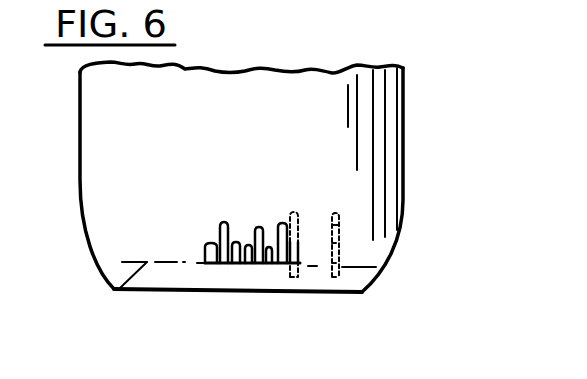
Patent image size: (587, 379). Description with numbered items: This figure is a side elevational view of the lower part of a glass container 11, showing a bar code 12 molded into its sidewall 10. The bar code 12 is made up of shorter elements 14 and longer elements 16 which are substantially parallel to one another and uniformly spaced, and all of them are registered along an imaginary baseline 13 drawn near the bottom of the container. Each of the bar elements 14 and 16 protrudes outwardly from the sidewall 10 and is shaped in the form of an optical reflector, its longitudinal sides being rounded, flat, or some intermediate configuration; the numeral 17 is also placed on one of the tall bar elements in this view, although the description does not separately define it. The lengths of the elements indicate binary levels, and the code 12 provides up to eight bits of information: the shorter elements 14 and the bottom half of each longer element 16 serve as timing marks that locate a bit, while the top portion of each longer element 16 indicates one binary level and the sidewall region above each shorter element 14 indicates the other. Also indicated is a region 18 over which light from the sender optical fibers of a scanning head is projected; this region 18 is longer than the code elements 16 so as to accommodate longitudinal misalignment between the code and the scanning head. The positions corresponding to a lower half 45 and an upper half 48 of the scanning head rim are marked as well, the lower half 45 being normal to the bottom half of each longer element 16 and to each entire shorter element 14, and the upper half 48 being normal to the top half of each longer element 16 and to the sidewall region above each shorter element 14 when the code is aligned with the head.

The sidewall 10 is at (378, 138).
The glass container 11 is at (405, 293).
The bar code 12 is at (244, 162).
The imaginary baseline 13 is at (116, 290).
The shorter elements 14 is at (207, 250).
The longer elements 16 is at (220, 265).
The tall contact tooth 17 is at (222, 222).
The region 18 is at (328, 230).
The lower half of the rim 45 is at (338, 258).
The upper half of the rim 48 is at (338, 228).